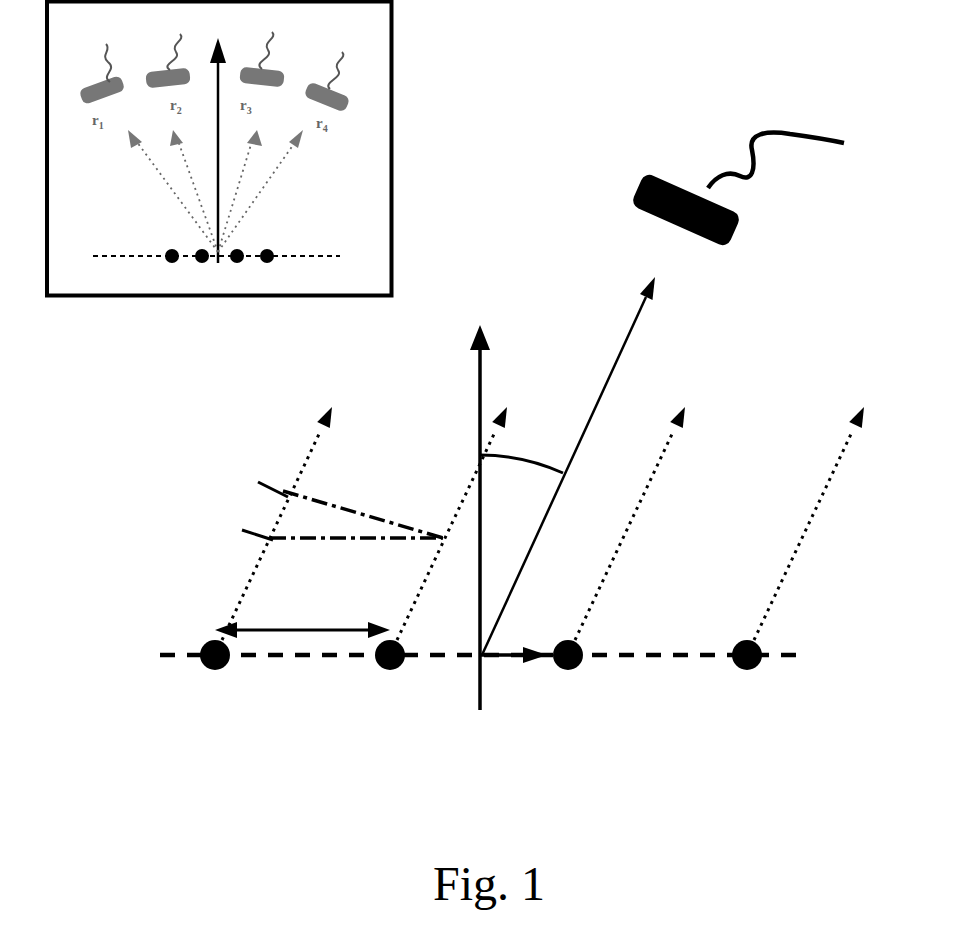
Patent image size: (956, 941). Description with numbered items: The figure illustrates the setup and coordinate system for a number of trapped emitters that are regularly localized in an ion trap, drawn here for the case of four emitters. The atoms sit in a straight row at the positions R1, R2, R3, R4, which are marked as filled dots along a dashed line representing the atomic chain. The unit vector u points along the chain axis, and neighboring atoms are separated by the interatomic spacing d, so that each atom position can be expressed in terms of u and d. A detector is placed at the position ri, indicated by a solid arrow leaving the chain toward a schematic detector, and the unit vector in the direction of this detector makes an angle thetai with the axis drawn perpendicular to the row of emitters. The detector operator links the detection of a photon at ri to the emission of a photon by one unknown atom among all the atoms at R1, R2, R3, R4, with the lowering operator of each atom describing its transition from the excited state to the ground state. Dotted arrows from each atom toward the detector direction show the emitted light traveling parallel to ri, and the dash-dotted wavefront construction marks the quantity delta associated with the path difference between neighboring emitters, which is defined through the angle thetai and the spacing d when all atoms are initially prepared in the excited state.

The atom position R1 is at (266, 589).
The atom position R2 is at (441, 589).
The atom position R3 is at (619, 589).
The atom position R4 is at (798, 589).
The detector position ri is at (663, 394).
The unit vector along the chain axis u is at (513, 685).
The angle thetai is at (521, 494).
The interatomic spacing d is at (302, 600).
The phase delay path difference delta is at (228, 500).